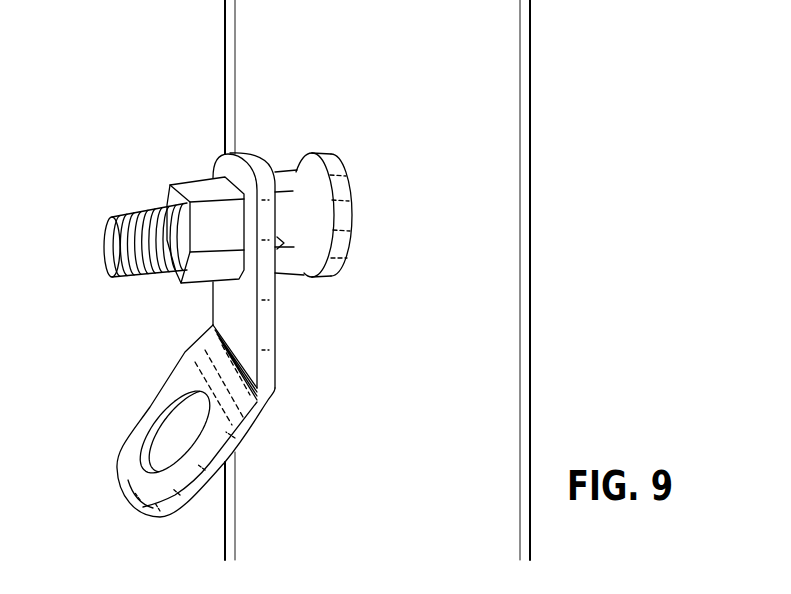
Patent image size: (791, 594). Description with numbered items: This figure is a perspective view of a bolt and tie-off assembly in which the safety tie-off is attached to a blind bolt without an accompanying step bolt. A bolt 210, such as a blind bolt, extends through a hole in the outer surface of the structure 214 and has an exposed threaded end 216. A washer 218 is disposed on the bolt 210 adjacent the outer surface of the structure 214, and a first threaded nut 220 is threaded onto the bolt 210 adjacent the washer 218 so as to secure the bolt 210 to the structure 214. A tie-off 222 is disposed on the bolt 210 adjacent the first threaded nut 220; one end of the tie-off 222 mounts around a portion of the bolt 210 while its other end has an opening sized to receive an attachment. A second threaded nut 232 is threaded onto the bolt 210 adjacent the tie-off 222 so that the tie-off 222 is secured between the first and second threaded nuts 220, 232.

The bolt 210 is at (118, 252).
The structure 214 is at (493, 275).
The exposed threaded end 216 is at (143, 207).
The washer 218 is at (328, 160).
The first threaded nut 220 is at (307, 220).
The tie-off 222 is at (202, 364).
The second threaded nut 232 is at (198, 188).